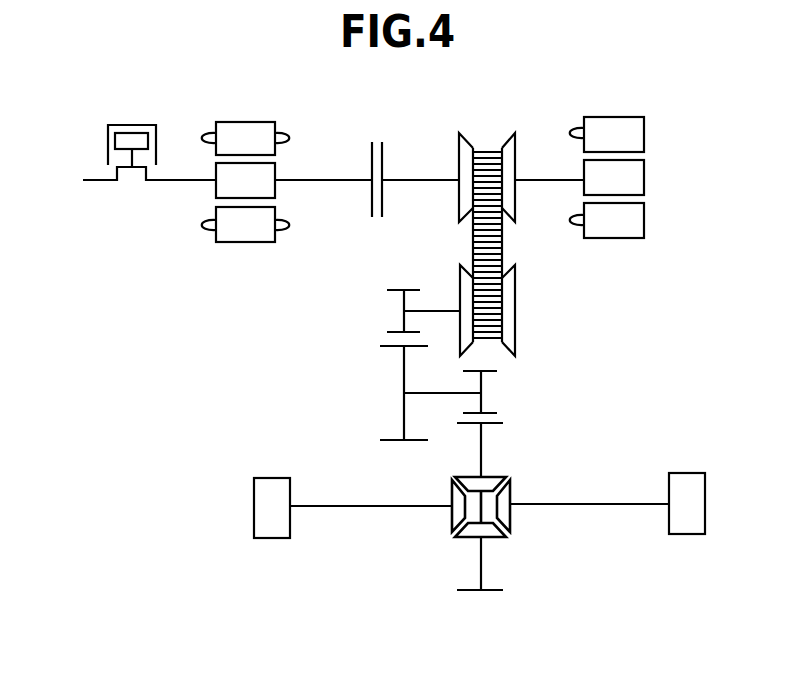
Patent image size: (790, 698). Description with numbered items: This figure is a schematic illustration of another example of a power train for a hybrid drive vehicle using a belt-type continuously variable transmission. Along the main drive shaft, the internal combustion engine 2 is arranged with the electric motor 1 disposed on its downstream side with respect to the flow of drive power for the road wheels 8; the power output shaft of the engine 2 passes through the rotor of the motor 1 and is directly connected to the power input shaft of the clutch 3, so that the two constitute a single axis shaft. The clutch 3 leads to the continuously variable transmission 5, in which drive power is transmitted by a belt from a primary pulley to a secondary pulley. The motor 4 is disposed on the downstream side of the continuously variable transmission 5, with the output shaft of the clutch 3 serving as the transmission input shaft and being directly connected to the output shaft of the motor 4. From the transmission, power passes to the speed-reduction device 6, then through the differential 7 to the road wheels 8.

The electric motor 1 is at (246, 122).
The internal combustion engine 2 is at (132, 125).
The clutch 3 is at (372, 210).
The motor 4 is at (614, 117).
The continuously variable transmission 5 is at (510, 135).
The speed-reduction device 6 is at (404, 360).
The differential 7 is at (510, 521).
The road wheels 8 is at (270, 538).